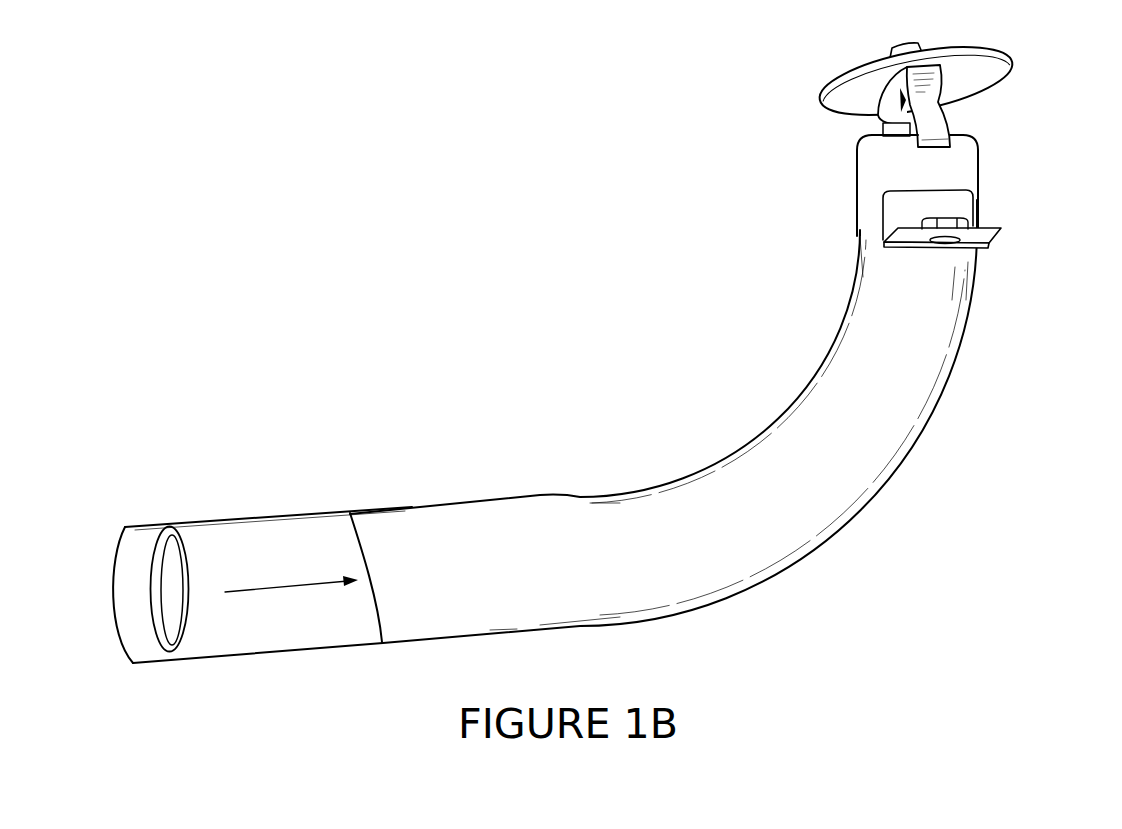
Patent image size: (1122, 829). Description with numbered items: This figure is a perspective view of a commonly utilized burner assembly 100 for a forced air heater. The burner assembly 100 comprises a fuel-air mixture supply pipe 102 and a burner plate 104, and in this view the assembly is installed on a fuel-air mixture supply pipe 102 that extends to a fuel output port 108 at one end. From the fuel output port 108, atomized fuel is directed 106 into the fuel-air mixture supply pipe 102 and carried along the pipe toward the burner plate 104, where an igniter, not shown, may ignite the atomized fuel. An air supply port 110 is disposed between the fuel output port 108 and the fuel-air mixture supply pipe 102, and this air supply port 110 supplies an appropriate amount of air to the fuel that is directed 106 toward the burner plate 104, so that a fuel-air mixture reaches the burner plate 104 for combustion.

The burner assembly 100 is at (752, 73).
The fuel-air mixture supply pipe 102 is at (967, 172).
The burner plate 104 is at (988, 66).
The direction of fuel 106 is at (888, 124).
The fuel output port 108 is at (177, 583).
The air supply port 110 is at (254, 565).